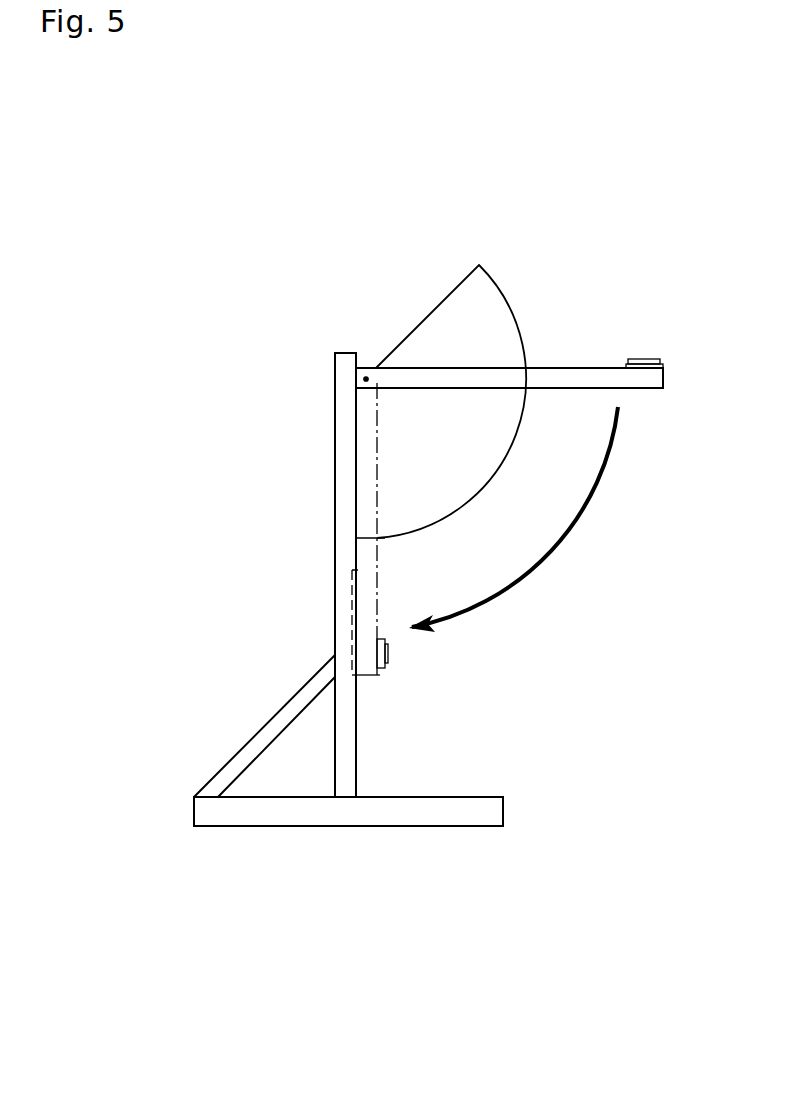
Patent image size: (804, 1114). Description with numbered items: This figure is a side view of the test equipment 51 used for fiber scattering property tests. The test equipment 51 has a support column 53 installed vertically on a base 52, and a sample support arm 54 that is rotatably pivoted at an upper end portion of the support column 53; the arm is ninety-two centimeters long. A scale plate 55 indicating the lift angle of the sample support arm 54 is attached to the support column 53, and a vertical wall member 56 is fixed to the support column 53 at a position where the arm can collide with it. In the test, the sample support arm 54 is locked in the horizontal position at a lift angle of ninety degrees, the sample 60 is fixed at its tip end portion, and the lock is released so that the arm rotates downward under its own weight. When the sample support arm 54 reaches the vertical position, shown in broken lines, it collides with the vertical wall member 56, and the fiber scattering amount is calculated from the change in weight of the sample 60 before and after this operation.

The test equipment 51 is at (608, 230).
The base 52 is at (402, 812).
The support column 53 is at (342, 513).
The sample support arm 54 is at (567, 378).
The scale plate 55 is at (468, 295).
The vertical wall member 56 is at (347, 635).
The sample 60 is at (653, 358).